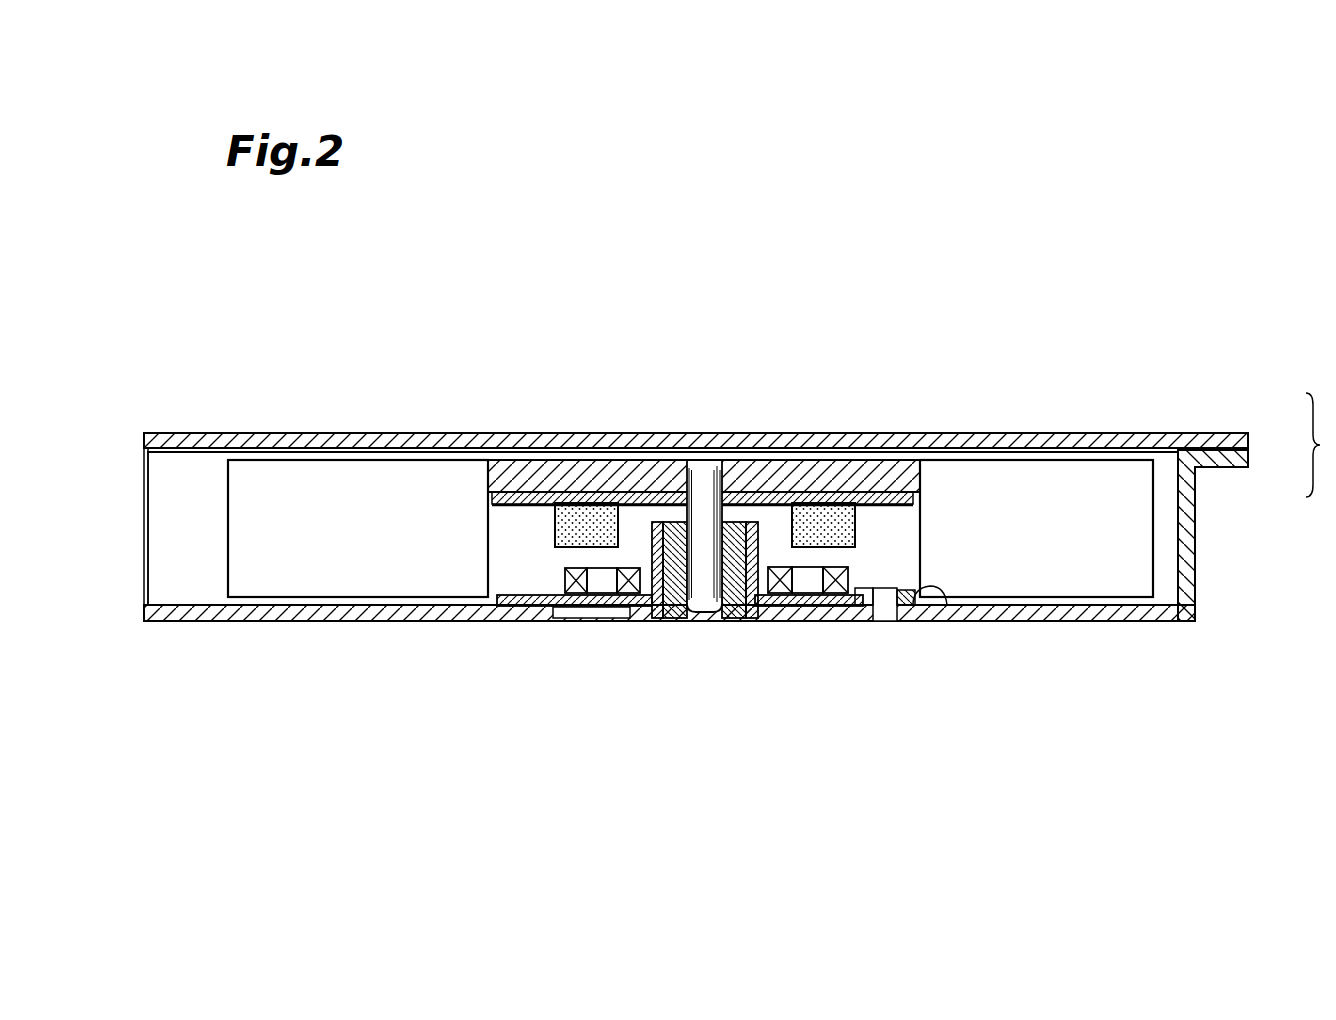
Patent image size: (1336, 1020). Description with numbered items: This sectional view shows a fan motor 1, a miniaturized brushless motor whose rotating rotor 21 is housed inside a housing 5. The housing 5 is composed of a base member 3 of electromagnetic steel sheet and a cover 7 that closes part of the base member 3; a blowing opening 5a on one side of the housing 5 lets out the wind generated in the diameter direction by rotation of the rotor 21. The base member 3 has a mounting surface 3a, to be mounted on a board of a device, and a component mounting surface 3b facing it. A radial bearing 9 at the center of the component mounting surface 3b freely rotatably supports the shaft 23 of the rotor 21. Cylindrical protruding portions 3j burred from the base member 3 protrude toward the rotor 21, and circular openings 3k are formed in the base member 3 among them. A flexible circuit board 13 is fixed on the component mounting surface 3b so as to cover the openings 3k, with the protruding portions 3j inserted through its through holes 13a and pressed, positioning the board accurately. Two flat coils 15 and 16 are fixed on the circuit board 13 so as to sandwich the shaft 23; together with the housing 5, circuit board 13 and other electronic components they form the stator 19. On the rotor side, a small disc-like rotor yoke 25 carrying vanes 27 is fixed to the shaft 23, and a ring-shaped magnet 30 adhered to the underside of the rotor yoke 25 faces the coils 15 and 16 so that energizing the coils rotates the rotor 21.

The fan motor 1 is at (1170, 346).
The base member 3 is at (1198, 504).
The mounting surface 3a is at (450, 623).
The component mounting surface 3b is at (342, 603).
The protruding portion 3j is at (915, 592).
The circular opening 3k is at (577, 622).
The housing 5 is at (1321, 445).
The blowing opening 5a is at (175, 530).
The cover 7 is at (1198, 440).
The radial bearing 9 is at (675, 623).
The circuit board 13 is at (802, 623).
The through hole 13a is at (878, 623).
The coil 15 is at (848, 574).
The coil 16 is at (567, 573).
The stator 19 is at (1198, 585).
The rotor 21 is at (875, 452).
The shaft 23 is at (704, 470).
The rotor yoke 25 is at (535, 497).
The vane 27 is at (272, 488).
The magnet 30 is at (555, 521).